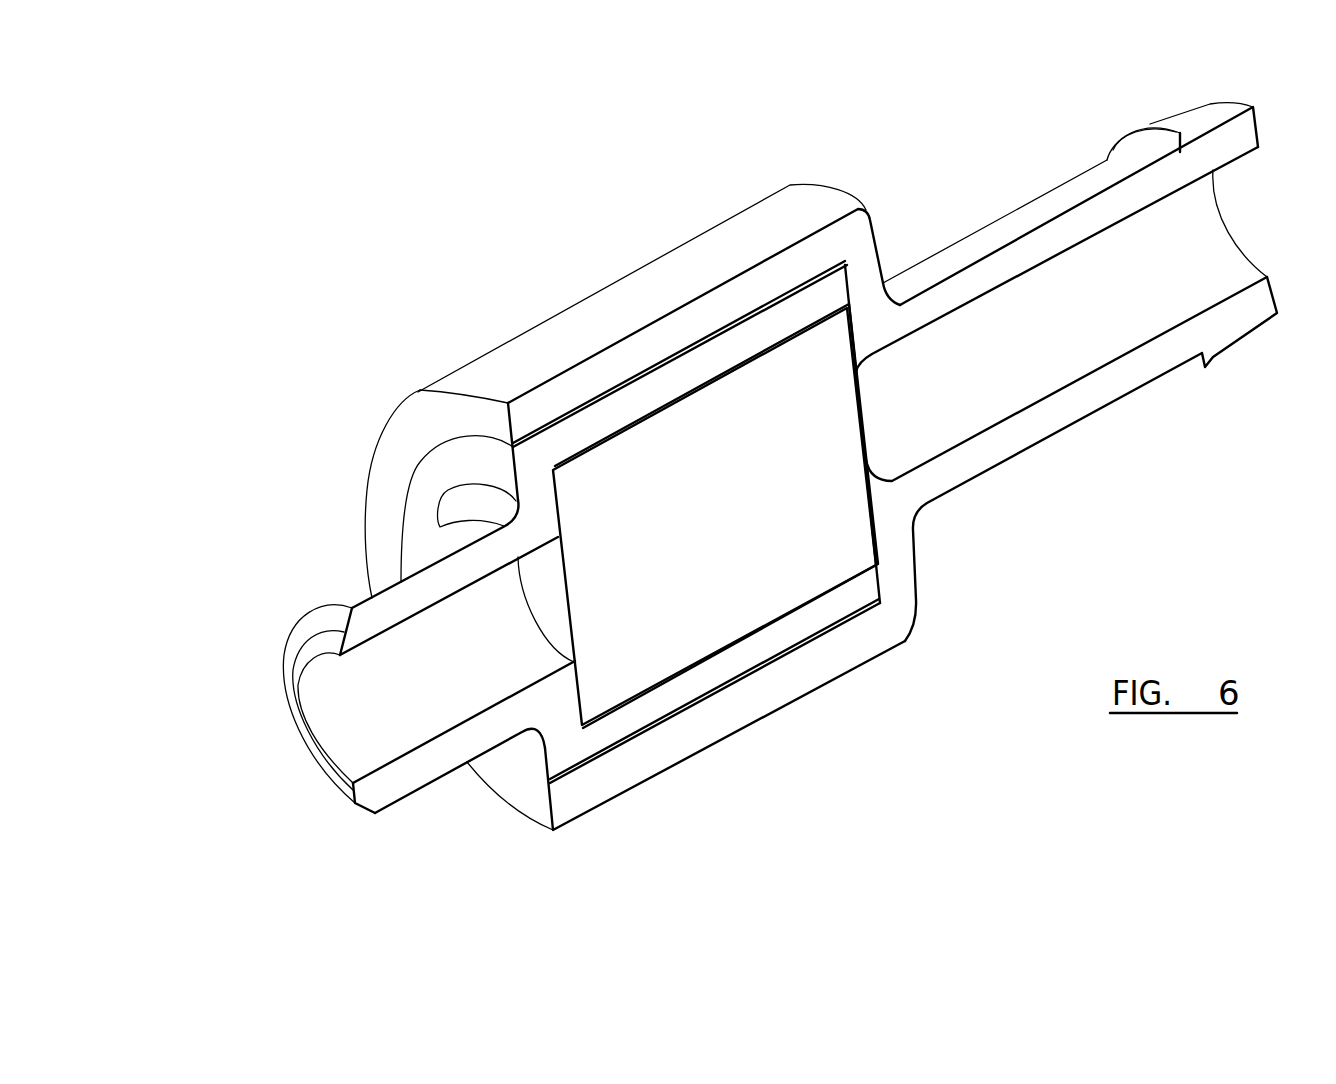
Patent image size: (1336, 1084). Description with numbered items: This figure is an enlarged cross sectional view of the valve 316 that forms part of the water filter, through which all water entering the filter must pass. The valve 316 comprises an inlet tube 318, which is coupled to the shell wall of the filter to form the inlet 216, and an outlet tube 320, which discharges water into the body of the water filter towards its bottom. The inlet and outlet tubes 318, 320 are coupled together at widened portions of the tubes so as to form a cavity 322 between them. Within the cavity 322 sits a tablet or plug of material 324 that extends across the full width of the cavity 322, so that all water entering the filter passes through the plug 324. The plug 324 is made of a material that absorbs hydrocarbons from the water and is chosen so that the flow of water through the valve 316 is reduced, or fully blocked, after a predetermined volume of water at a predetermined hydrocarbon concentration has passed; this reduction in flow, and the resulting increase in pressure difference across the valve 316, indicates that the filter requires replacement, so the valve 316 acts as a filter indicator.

The valve 316 is at (577, 281).
The inlet tube 318 is at (397, 601).
The outlet tube 320 is at (1016, 262).
The cavity 322 is at (708, 748).
The plug of material 324 is at (762, 555).
The inlet 216 is at (350, 700).